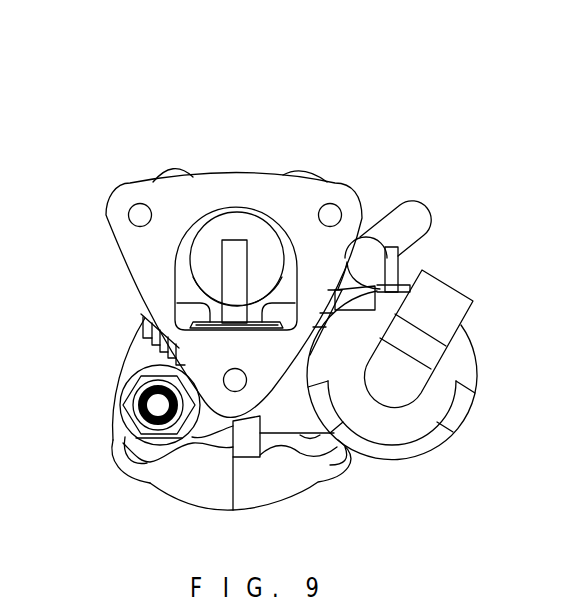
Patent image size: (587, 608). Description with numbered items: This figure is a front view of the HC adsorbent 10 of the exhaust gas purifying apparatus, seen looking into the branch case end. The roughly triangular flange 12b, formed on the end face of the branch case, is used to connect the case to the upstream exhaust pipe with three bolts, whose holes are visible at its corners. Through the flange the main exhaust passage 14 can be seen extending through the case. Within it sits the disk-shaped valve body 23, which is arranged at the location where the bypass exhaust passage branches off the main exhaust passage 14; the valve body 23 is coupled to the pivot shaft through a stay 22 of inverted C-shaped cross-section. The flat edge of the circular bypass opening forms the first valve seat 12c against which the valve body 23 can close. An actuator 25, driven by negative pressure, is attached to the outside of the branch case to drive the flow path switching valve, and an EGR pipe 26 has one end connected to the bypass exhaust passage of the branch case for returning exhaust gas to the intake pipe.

The HC adsorbent 10 is at (428, 96).
The flange 12b is at (268, 172).
The first valve seat 12c is at (203, 307).
The main exhaust passage 14 is at (284, 290).
The stay 22 is at (237, 282).
The valve body 23 is at (213, 232).
The actuator 25 is at (477, 357).
The EGR pipe 26 is at (137, 412).